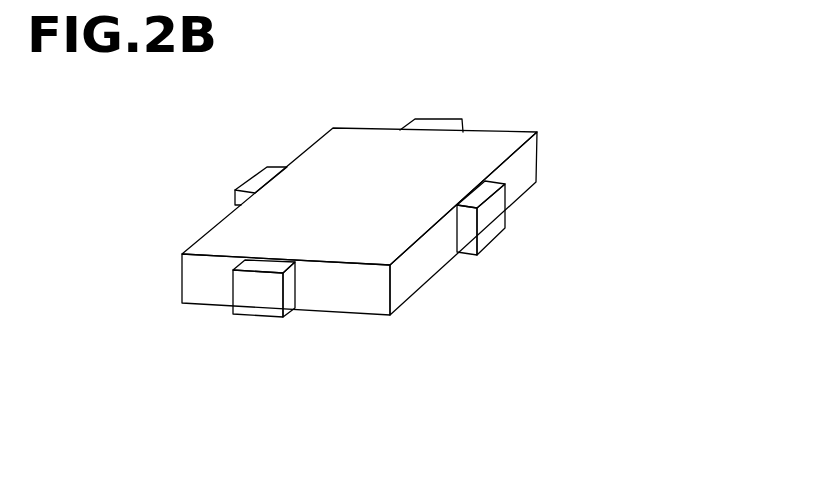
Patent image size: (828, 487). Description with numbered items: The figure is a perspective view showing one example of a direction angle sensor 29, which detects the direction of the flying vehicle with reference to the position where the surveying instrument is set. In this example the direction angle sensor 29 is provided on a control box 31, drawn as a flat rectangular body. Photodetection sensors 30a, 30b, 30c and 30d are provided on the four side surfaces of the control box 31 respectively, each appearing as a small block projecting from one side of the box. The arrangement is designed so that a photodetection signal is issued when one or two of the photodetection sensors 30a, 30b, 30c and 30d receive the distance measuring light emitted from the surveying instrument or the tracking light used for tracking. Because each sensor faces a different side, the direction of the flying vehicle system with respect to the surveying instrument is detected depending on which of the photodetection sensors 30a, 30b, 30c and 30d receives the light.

The direction angle sensor 29 is at (423, 182).
The control box 31 is at (490, 130).
The photodetection sensor 30a is at (498, 237).
The photodetection sensor 30b is at (257, 317).
The photodetection sensor 30c is at (247, 184).
The photodetection sensor 30d is at (443, 119).